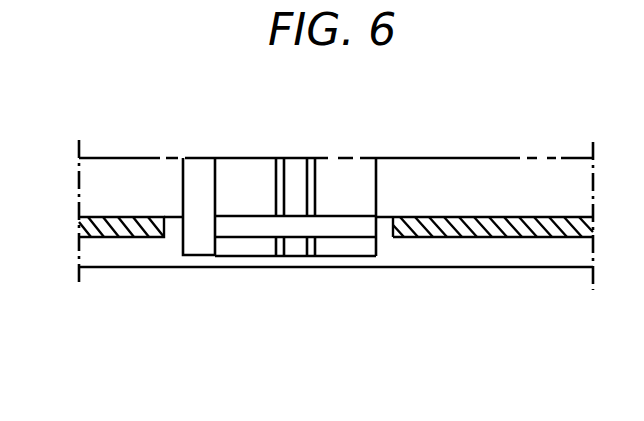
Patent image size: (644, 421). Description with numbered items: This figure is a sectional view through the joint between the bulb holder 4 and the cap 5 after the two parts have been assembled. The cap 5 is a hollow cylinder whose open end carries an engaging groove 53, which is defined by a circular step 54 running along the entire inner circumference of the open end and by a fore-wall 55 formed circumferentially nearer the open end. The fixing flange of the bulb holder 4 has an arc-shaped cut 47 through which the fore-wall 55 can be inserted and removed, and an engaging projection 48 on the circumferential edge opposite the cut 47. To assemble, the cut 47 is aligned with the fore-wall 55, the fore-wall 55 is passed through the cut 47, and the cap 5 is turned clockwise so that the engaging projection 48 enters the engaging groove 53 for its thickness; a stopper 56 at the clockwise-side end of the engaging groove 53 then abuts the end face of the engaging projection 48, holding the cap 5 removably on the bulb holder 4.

The bulb holder 4 is at (470, 237).
The cap 5 is at (532, 272).
The arc-shaped cut 47 is at (170, 232).
The engaging projection 48 is at (410, 232).
The engaging groove 53 is at (238, 219).
The circular step 54 is at (387, 220).
The fore-wall 55 is at (262, 248).
The stopper 56 is at (202, 245).